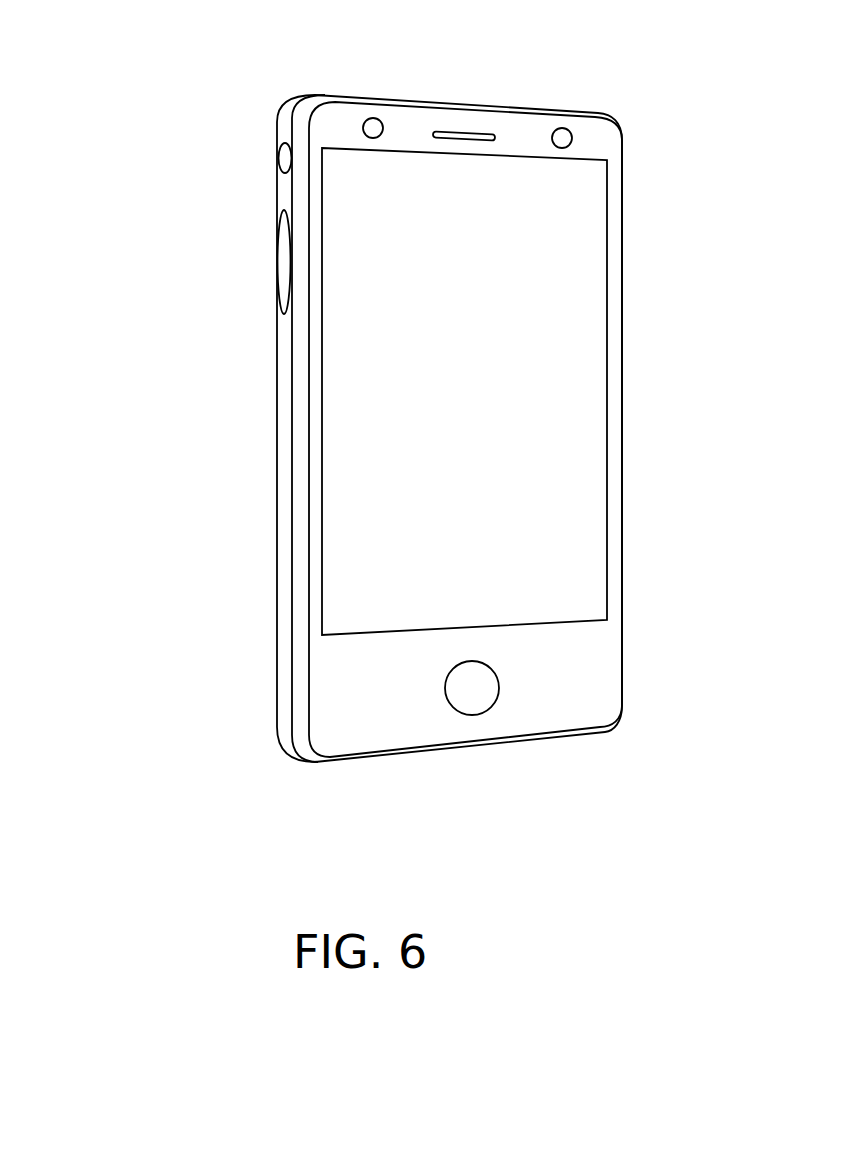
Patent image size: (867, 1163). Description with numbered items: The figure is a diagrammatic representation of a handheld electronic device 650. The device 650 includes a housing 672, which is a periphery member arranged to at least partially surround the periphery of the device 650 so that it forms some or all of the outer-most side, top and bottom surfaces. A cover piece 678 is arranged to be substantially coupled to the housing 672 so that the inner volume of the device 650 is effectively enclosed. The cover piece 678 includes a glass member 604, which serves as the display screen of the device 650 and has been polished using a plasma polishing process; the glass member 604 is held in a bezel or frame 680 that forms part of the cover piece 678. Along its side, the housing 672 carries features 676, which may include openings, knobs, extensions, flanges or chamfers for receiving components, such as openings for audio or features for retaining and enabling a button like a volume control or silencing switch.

The handheld electronic device 650 is at (120, 31).
The housing 672 is at (282, 637).
The cover piece 678 is at (292, 576).
The bezel or frame 680 is at (300, 547).
The glass member 604 is at (573, 325).
The features 676 is at (282, 160).